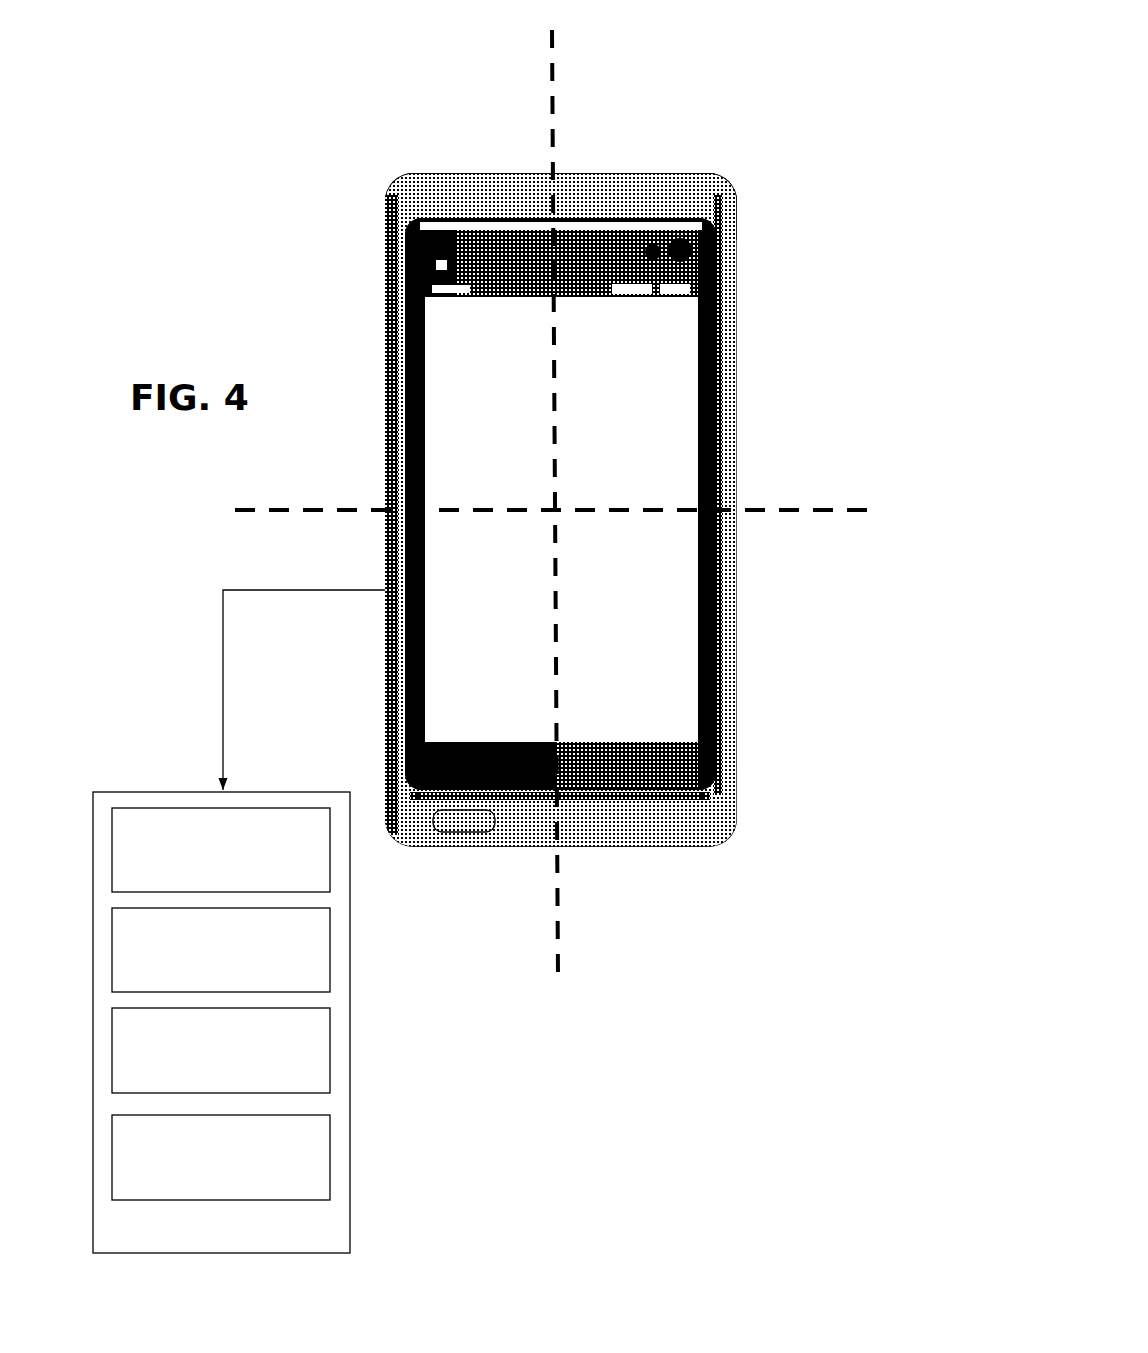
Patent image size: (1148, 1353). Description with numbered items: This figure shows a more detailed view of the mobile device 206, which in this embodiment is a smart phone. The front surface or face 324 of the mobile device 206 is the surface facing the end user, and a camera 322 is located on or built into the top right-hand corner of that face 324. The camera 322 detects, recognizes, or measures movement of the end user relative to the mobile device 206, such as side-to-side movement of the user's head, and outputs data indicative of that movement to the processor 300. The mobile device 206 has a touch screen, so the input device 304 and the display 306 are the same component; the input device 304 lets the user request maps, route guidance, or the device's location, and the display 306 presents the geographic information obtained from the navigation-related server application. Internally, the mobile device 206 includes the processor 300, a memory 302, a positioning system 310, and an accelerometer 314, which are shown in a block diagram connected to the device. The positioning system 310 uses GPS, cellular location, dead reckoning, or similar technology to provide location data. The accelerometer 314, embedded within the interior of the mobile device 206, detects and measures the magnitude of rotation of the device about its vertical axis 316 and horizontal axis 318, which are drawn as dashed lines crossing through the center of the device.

The mobile device 206 is at (578, 500).
The processor 300 is at (204, 866).
The memory 302 is at (204, 966).
The input device 304 is at (567, 572).
The display 306 is at (473, 452).
The positioning system 310 is at (204, 1066).
The accelerometer 314 is at (204, 1175).
The vertical axis 316 is at (567, 970).
The horizontal axis 318 is at (865, 527).
The camera 322 is at (742, 260).
The front surface or face 324 is at (427, 172).